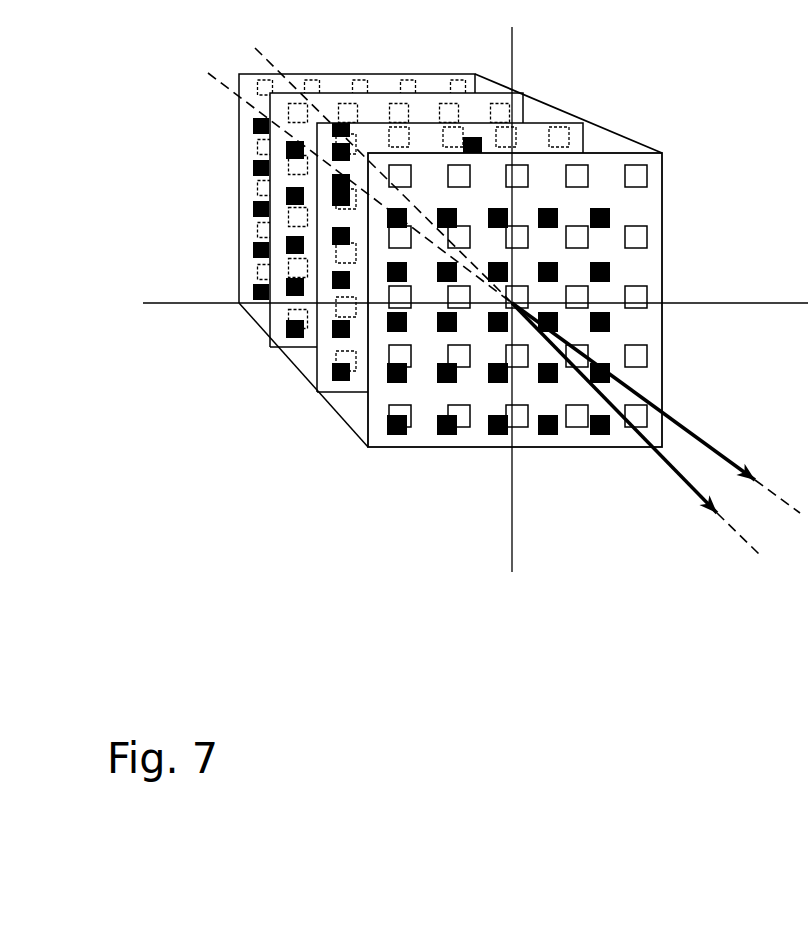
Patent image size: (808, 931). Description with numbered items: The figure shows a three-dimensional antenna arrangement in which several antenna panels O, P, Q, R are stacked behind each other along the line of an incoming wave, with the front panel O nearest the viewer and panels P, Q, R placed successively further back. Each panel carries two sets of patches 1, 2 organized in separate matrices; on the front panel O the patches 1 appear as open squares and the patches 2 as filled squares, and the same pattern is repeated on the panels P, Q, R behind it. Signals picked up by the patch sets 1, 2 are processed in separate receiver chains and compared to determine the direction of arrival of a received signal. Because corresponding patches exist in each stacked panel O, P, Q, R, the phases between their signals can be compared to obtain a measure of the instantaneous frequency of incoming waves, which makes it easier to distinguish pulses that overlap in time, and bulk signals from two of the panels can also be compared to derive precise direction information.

The antenna panel R is at (236, 305).
The antenna panel Q is at (269, 347).
The antenna panel P is at (316, 392).
The antenna panel O is at (367, 447).
The patch set 1 is at (457, 412).
The patch set 2 is at (502, 436).